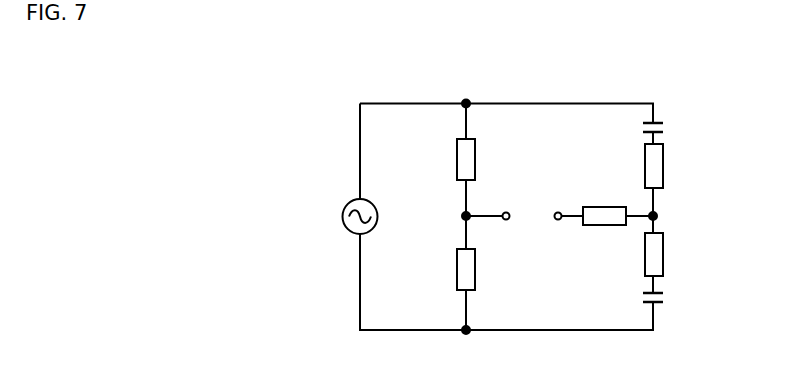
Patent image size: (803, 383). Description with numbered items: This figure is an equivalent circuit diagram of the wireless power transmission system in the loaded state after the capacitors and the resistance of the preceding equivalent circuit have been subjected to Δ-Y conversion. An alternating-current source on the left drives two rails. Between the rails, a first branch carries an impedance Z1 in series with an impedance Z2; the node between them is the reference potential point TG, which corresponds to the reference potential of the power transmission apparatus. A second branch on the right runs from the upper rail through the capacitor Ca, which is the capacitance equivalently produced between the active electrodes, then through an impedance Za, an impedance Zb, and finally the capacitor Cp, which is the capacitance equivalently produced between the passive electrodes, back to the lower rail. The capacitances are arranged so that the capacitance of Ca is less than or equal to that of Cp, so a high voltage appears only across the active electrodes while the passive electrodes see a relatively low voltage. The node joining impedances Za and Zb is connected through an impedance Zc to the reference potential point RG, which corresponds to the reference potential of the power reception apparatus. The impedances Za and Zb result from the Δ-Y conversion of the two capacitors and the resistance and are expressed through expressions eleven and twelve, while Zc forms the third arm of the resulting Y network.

The impedance Z1 is at (450, 159).
The impedance Z2 is at (450, 269).
The reference potential point of the power transmission apparatus TG is at (491, 230).
The reference potential point of the power reception apparatus RG is at (562, 230).
The impedance Zc is at (618, 204).
The capacitor Ca is at (667, 127).
The impedance Za is at (671, 166).
The impedance Zb is at (671, 254).
The capacitor Cp is at (671, 297).